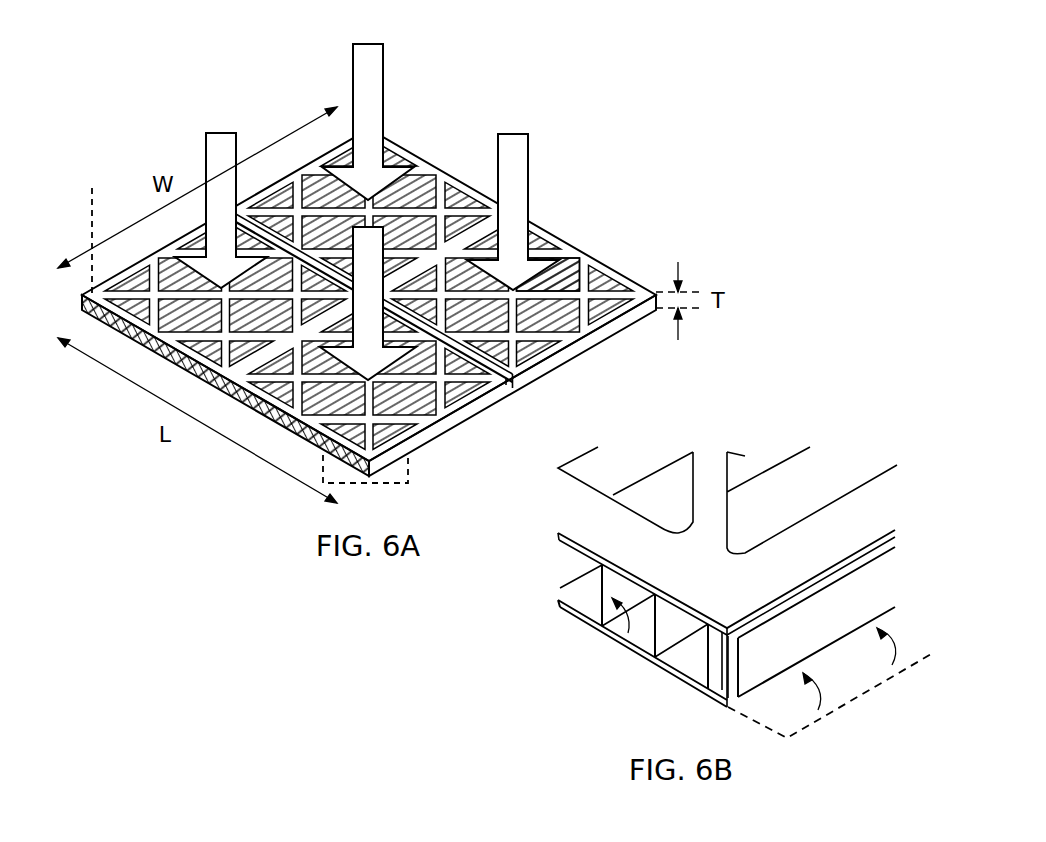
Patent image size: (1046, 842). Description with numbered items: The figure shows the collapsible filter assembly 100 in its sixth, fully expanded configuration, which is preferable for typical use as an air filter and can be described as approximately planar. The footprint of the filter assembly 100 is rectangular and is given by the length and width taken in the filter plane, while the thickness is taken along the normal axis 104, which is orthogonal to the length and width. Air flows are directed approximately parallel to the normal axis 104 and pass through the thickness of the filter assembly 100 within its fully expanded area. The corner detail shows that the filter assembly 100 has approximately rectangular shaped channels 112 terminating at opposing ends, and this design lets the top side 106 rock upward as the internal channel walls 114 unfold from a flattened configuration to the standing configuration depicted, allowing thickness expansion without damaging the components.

In FIG. 6A, the collapsible filter assembly 100 is at (238, 57).
In FIG. 6A, the normal axis 104 is at (92, 188).
In FIG. 6A, the top side 106 is at (555, 276).
In FIG. 6B, the top side 106 is at (877, 510).
In FIG. 6B, the channels 112 is at (587, 586).
In FIG. 6B, the internal channel walls 114 is at (663, 633).